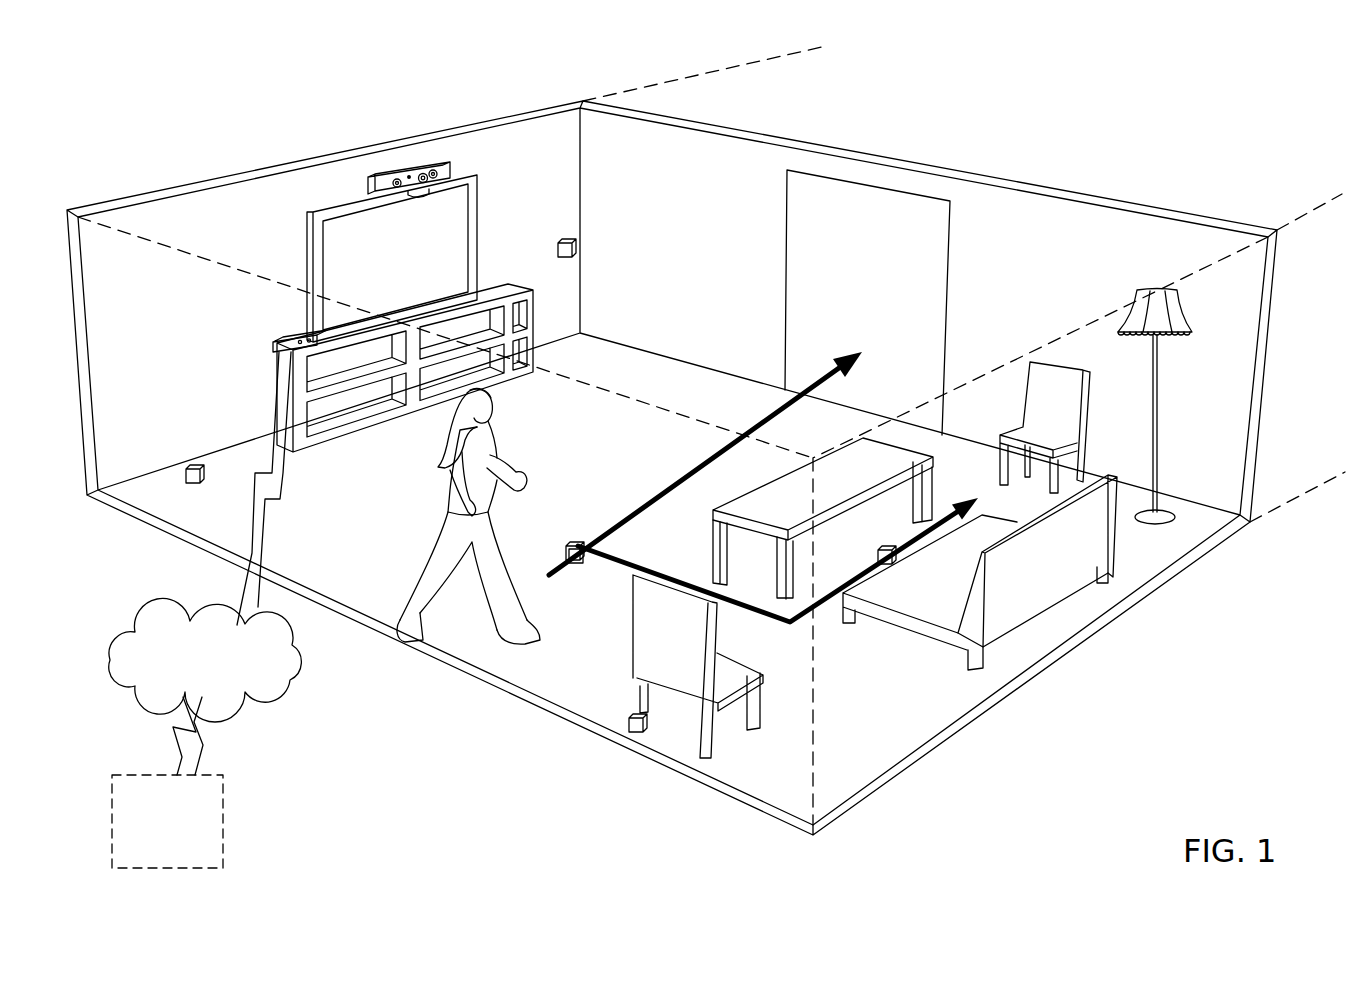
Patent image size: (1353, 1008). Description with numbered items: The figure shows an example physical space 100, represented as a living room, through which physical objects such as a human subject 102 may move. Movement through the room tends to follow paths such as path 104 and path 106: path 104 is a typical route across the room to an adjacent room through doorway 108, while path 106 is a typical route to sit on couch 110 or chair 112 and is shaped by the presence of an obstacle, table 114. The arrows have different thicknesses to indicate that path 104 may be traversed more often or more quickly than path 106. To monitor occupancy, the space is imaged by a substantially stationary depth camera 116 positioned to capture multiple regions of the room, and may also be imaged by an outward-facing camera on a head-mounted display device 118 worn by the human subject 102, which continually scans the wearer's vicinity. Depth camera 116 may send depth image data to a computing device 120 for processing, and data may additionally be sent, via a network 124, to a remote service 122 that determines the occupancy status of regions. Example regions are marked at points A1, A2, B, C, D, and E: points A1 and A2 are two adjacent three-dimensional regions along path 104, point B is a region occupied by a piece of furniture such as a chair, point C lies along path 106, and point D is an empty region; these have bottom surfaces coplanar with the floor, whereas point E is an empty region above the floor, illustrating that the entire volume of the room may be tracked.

The physical space 100 is at (712, 150).
The human subject 102 is at (447, 540).
The path 104 is at (677, 478).
The path 106 is at (694, 574).
The doorway 108 is at (884, 190).
The couch 110 is at (1069, 578).
The chair 112 is at (1077, 368).
The table 114 is at (888, 452).
The depth camera 116 is at (449, 167).
The head-mounted display (HMD) device 118 is at (485, 405).
The computing device 120 is at (277, 341).
The remote service 122 is at (167, 821).
The network 124 is at (205, 660).
The point A1 is at (569, 544).
The point A2 is at (581, 541).
The point B is at (630, 720).
The point C is at (886, 548).
The point D is at (202, 476).
The point E is at (565, 241).